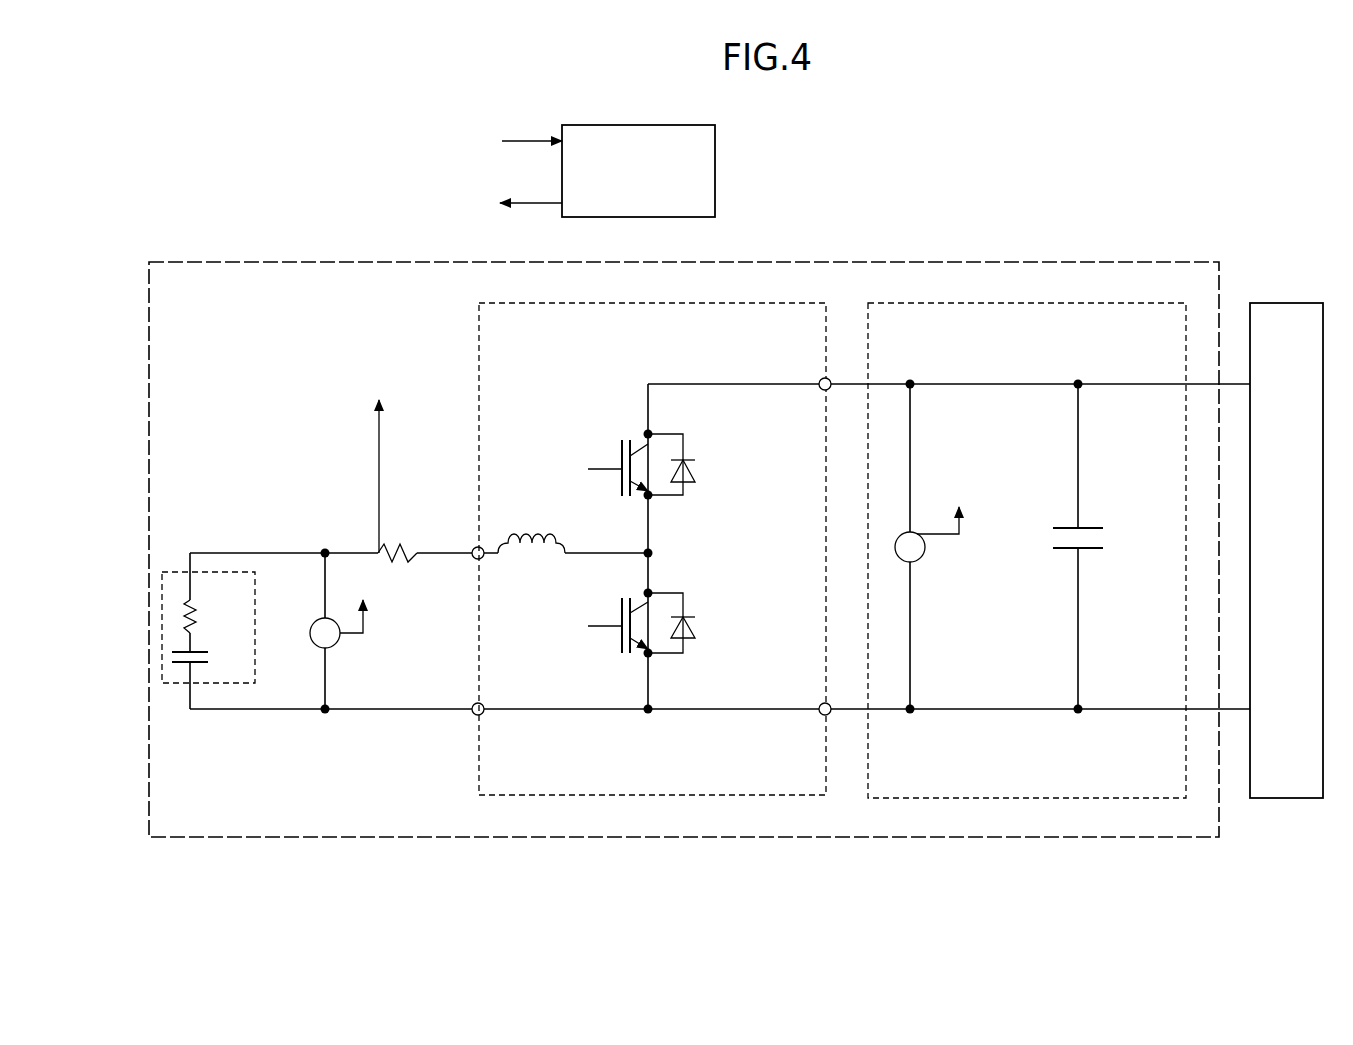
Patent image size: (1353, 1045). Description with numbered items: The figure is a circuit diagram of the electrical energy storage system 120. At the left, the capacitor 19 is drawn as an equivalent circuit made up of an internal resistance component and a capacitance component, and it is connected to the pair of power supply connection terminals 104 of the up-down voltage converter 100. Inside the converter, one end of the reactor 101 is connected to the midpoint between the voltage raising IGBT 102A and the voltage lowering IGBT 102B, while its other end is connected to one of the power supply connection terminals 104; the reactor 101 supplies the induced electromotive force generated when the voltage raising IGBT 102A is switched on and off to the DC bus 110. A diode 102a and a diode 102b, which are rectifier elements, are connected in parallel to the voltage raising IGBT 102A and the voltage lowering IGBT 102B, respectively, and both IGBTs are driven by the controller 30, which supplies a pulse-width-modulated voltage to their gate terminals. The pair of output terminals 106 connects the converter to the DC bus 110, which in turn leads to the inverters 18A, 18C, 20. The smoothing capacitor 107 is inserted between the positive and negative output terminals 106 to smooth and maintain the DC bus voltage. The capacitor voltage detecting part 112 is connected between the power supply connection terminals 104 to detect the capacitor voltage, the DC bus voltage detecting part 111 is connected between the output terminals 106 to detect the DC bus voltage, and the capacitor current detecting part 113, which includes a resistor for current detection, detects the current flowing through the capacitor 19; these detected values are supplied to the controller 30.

The controller 30 is at (655, 125).
The electrical energy storage system 120 is at (1127, 262).
The up-down voltage converter 100 is at (720, 303).
The DC bus 110 is at (1160, 303).
The reactor 101 is at (542, 543).
The voltage raising IGBT 102A is at (622, 655).
The voltage lowering IGBT 102B is at (625, 438).
The diode 102a is at (698, 628).
The diode 102b is at (698, 470).
The power supply connection terminals 104 is at (474, 559).
The output terminals 106 is at (821, 380).
The smoothing capacitor 107 is at (1105, 540).
The DC bus voltage detecting part 111 is at (926, 549).
The capacitor voltage detecting part 112 is at (342, 636).
The capacitor current detecting part 113 is at (393, 545).
The capacitor 19 is at (257, 590).
The inverter 18A is at (1288, 303).
The inverter 18C is at (1286, 513).
The inverter 20 is at (1286, 513).